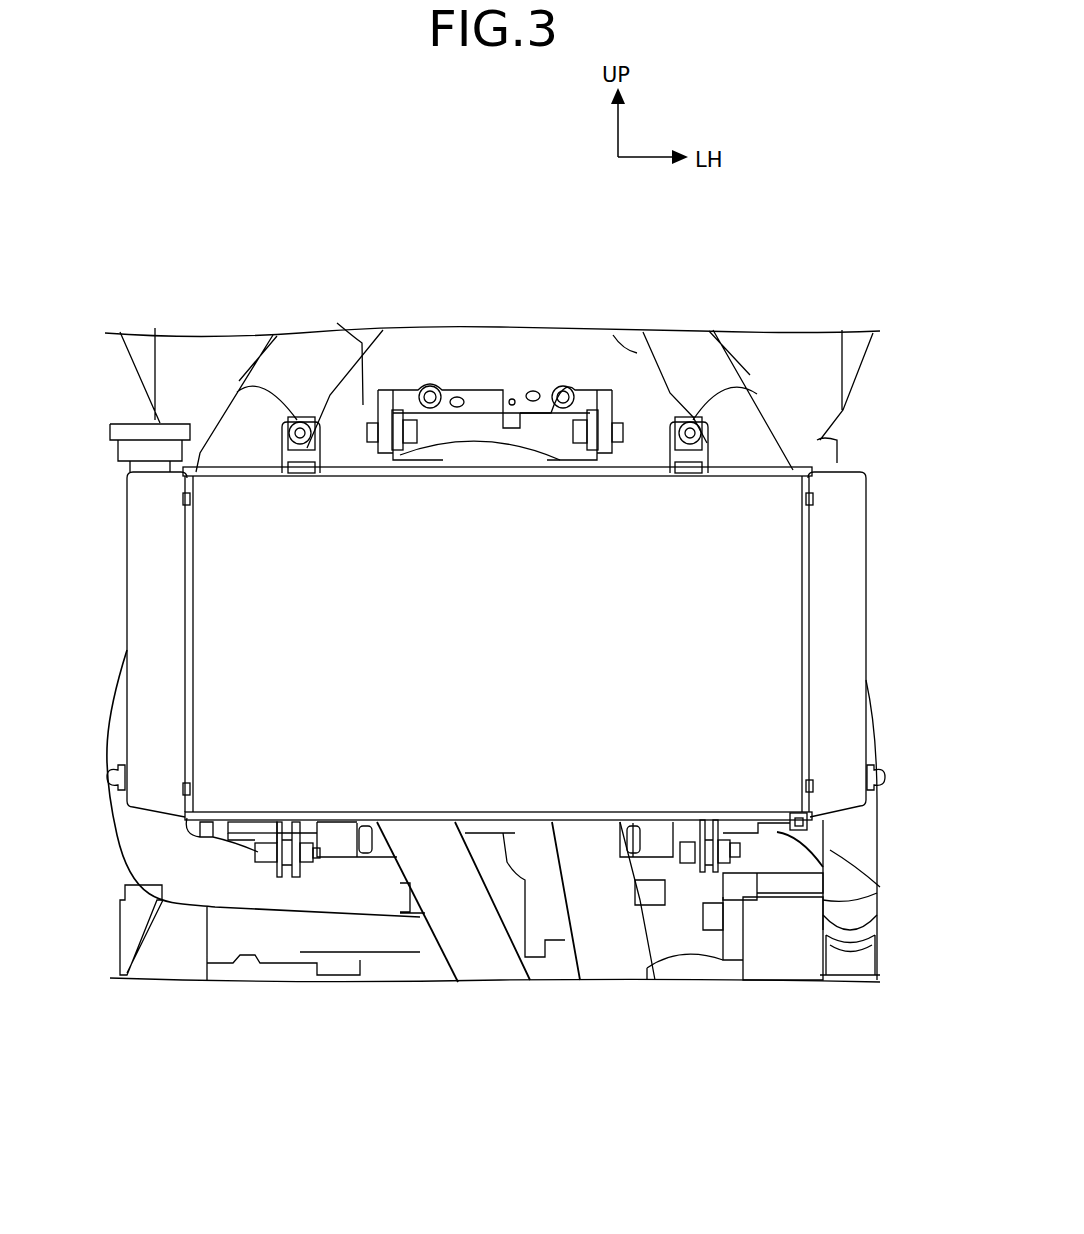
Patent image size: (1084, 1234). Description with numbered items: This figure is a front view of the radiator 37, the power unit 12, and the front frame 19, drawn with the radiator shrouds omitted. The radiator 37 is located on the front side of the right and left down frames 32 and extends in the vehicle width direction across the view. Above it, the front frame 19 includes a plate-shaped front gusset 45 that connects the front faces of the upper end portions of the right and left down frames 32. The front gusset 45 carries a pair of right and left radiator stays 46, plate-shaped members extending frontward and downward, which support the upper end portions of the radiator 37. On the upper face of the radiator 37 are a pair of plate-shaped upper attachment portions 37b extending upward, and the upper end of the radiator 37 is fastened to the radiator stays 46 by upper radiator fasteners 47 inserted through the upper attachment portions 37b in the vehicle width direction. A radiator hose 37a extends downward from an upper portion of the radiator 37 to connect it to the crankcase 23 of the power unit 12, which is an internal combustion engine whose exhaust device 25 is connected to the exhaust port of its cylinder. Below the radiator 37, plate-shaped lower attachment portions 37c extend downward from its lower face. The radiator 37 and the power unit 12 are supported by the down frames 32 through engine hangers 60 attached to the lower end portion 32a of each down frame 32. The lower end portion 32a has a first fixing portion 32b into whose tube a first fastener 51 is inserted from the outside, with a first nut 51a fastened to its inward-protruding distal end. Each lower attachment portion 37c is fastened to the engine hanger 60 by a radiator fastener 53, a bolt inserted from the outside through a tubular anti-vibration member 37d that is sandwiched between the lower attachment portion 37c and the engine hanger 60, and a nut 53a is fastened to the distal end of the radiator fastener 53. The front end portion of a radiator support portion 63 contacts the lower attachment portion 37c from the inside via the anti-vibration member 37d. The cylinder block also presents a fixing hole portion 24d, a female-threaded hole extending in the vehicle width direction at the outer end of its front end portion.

The power unit 12 is at (690, 984).
The front frame 19 is at (321, 331).
The crankcase 23 is at (745, 962).
The fixing hole portion 24d is at (340, 812).
The exhaust device 25 is at (596, 962).
The down frame 32 is at (227, 423).
The lower end portion 32a is at (217, 840).
The first fixing portion 32b is at (210, 837).
The radiator 37 is at (870, 492).
The radiator hose 37a is at (877, 852).
The upper attachment portion 37b is at (393, 430).
The lower attachment portion 37c is at (279, 878).
The anti-vibration member 37d is at (295, 878).
The front gusset 45 is at (500, 372).
The radiator stay 46 is at (362, 403).
The upper radiator fastener 47 is at (423, 410).
The first fastener 51 is at (200, 824).
The first nut 51a is at (340, 830).
The radiator fastener 53 is at (252, 864).
The nut 53a is at (314, 860).
The engine hanger 60 is at (289, 868).
The radiator support portion 63 is at (700, 788).